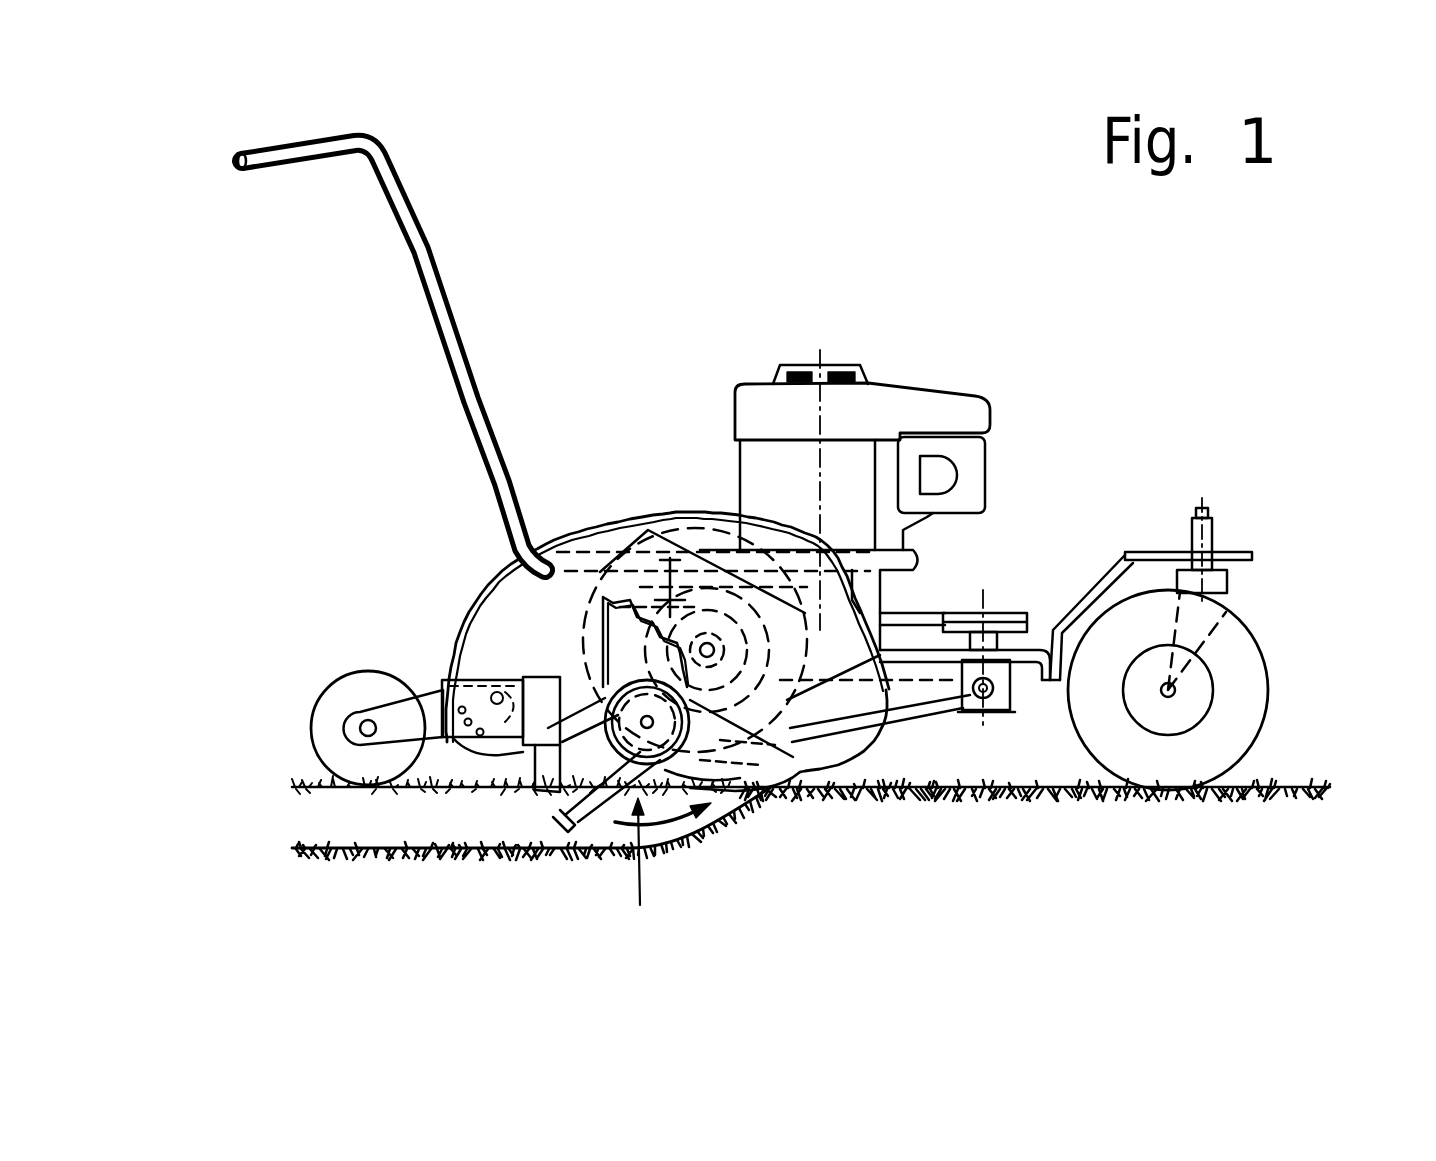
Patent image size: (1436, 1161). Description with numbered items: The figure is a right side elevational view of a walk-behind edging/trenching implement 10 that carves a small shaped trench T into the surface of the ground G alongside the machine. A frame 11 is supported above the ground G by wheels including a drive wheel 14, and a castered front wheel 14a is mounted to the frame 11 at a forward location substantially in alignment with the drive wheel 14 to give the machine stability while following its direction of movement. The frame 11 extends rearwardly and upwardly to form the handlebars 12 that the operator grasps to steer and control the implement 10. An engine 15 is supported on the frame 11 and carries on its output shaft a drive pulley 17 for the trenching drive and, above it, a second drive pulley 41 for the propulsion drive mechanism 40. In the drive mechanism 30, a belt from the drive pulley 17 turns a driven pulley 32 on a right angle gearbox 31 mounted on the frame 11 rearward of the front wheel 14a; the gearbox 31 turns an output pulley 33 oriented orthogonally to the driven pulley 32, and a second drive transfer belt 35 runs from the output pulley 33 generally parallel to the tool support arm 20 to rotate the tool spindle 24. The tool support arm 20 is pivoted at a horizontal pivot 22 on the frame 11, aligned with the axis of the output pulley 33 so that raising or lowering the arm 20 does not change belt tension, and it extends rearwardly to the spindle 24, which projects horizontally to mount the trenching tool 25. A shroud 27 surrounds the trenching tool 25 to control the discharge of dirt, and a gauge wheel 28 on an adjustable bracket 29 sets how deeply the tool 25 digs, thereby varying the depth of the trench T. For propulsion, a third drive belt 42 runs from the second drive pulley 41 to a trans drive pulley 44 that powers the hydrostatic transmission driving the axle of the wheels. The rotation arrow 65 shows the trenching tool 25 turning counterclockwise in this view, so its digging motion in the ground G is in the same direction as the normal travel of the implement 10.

The edging/trenching implement 10 is at (1205, 312).
The frame 11 is at (1045, 672).
The handlebars 12 is at (400, 167).
The drive wheel 14 is at (795, 752).
The front wheel 14a is at (1262, 657).
The engine 15 is at (888, 383).
The drive pulley 17 is at (855, 565).
The tool support arm 20 is at (997, 720).
The horizontal pivot 22 is at (1010, 692).
The tool spindle 24 is at (568, 796).
The trenching tool 25 is at (640, 905).
The shroud 27 is at (470, 633).
The gauge wheel 28 is at (312, 716).
The adjustable bracket 29 is at (445, 694).
The drive mechanism 30 is at (1112, 515).
The right angle gearbox 31 is at (1068, 688).
The driven pulley 32 is at (1003, 677).
The output pulley 33 is at (1012, 697).
The second drive transfer belt 35 is at (780, 770).
The propulsion drive mechanism 40 is at (598, 320).
The second drive pulley 41 is at (787, 610).
The third drive belt 42 is at (727, 613).
The trans drive pulley 44 is at (645, 600).
The rotation arrow 65 is at (687, 823).
The ground G is at (1265, 787).
The trench T is at (322, 848).